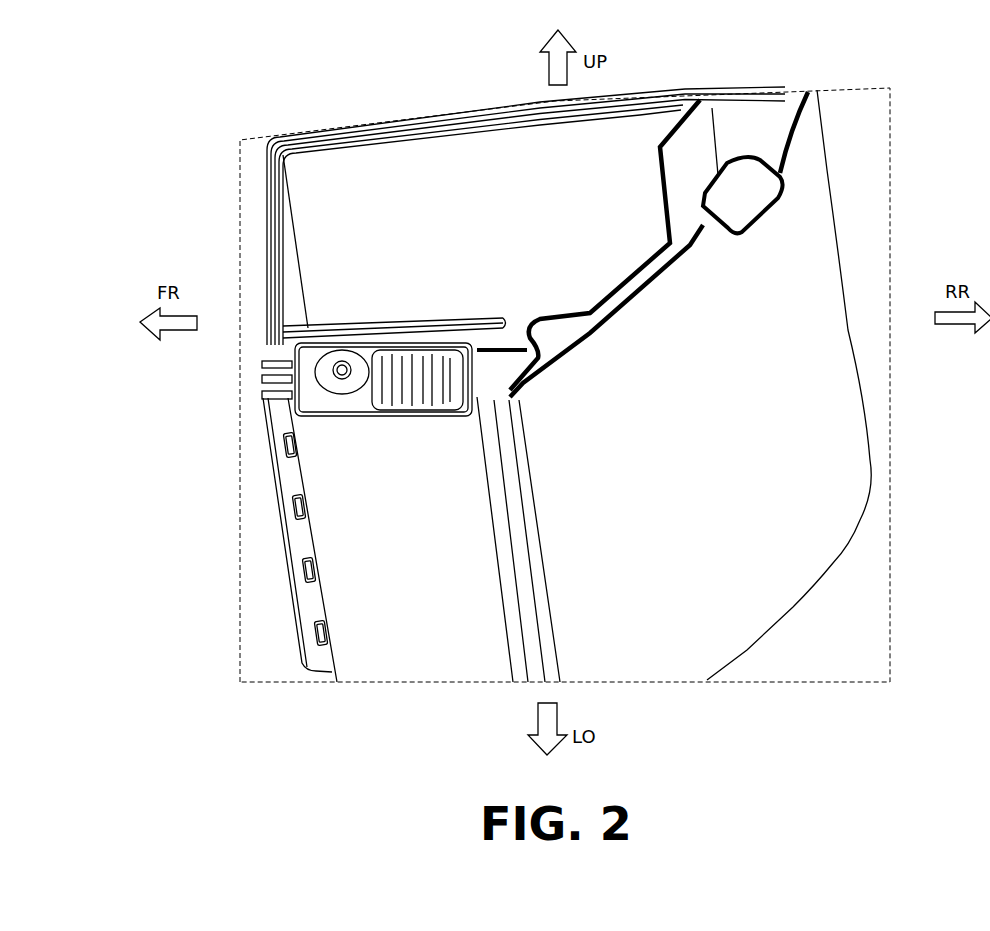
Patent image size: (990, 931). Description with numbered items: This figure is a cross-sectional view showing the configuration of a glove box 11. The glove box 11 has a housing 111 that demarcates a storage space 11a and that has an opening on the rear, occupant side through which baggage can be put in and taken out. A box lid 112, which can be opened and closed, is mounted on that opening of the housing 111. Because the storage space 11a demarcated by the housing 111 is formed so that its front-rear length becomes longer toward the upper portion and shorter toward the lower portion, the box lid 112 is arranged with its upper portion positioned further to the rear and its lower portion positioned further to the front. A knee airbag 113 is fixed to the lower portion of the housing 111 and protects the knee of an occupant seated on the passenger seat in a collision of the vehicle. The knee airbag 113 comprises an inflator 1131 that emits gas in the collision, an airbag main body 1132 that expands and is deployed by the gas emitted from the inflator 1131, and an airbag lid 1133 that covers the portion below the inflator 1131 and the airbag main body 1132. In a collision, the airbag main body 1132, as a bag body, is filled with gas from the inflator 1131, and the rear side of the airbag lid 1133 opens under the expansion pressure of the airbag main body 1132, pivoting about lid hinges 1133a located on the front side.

The glove box 11 is at (833, 102).
The storage space 11a is at (483, 183).
The housing 111 is at (307, 134).
The box lid 112 is at (833, 207).
The knee airbag 113 is at (294, 500).
The inflator 1131 is at (260, 371).
The airbag main body 1132 is at (293, 411).
The airbag lid 1133 is at (287, 465).
The lid hinges 1133a is at (293, 580).